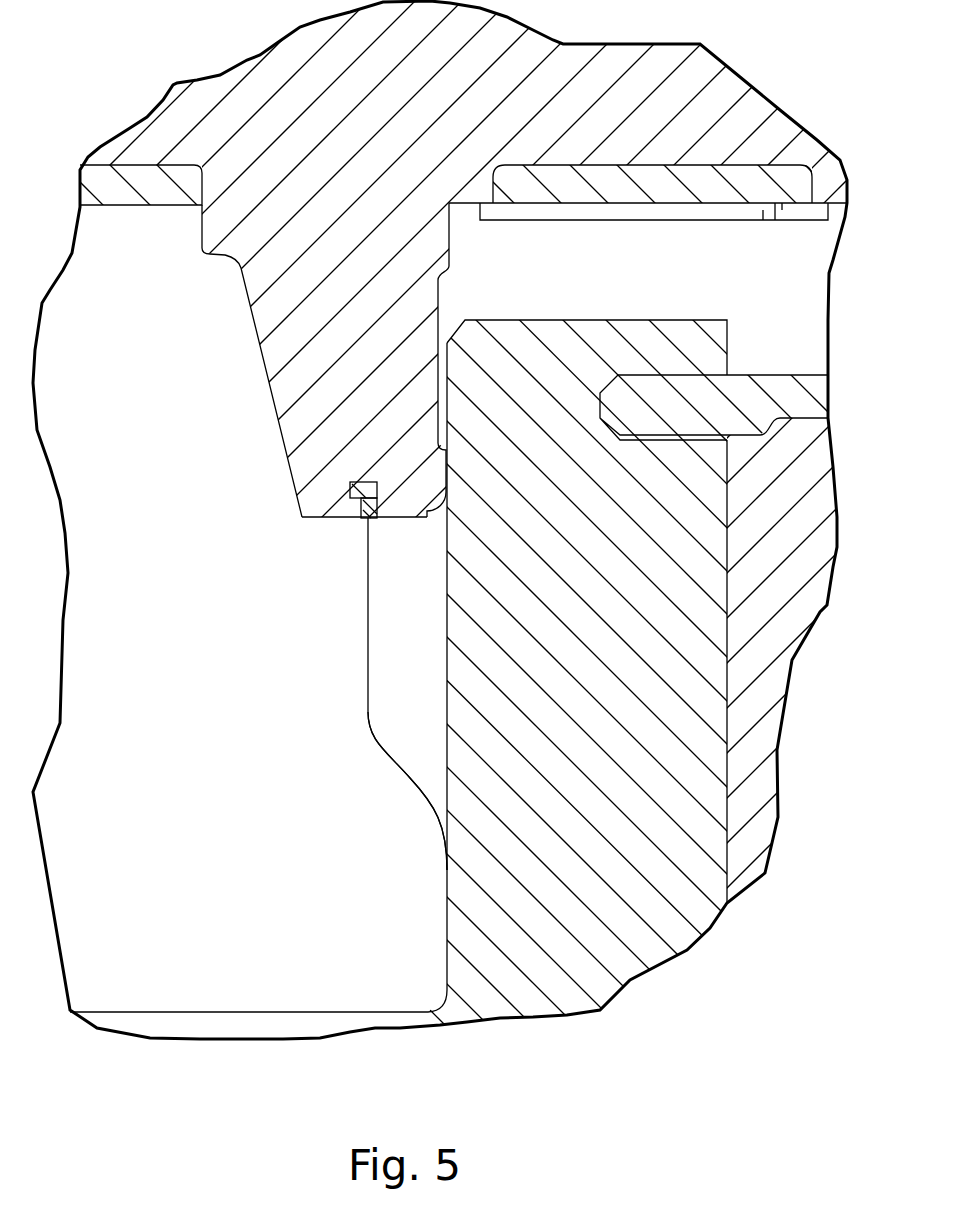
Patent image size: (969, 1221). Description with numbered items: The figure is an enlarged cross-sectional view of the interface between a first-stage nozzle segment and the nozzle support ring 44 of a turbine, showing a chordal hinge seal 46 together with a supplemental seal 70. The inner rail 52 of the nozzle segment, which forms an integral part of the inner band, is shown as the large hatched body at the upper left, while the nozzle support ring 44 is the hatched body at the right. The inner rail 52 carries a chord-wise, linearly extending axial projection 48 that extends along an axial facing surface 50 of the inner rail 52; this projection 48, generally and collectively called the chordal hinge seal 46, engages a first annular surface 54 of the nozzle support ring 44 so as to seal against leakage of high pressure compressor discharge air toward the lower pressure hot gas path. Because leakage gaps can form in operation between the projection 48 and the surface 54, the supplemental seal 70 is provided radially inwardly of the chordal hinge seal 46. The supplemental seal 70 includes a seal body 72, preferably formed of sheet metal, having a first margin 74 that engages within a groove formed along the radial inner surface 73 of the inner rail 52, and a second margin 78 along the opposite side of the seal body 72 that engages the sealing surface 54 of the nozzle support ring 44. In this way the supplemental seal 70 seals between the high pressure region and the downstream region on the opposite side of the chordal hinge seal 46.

The nozzle support ring 44 is at (484, 610).
The chordal hinge seal 46 is at (316, 451).
The axial projection 48 is at (437, 475).
The axial facing surface 50 is at (438, 293).
The inner rail 52 is at (484, 610).
The first annular surface 54 is at (447, 745).
The supplemental seal 70 is at (311, 676).
The seal body 72 is at (368, 567).
The radial inner surface 73 is at (300, 522).
The first margin 74 is at (376, 487).
The second margin 78 is at (432, 807).